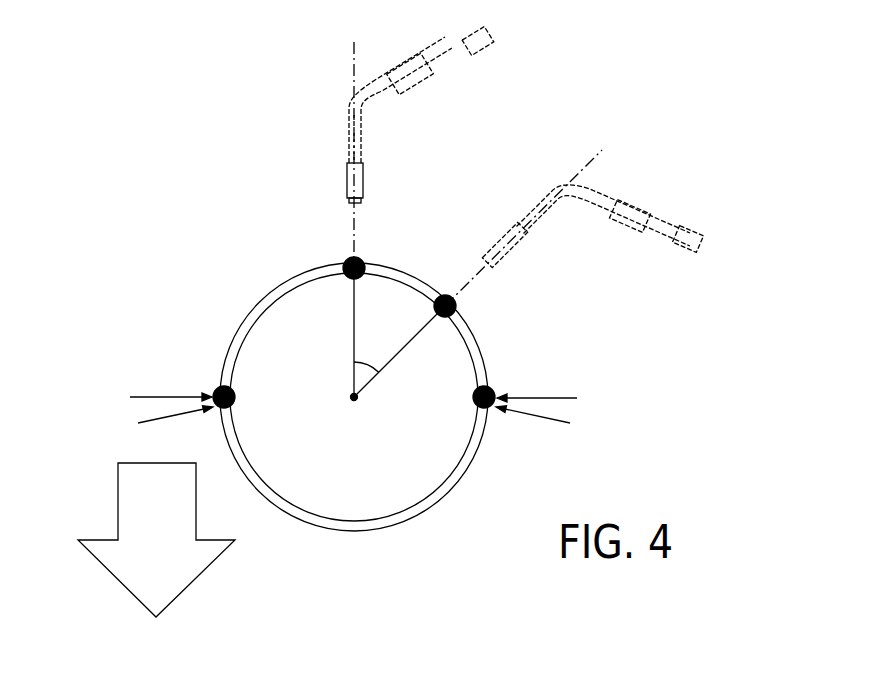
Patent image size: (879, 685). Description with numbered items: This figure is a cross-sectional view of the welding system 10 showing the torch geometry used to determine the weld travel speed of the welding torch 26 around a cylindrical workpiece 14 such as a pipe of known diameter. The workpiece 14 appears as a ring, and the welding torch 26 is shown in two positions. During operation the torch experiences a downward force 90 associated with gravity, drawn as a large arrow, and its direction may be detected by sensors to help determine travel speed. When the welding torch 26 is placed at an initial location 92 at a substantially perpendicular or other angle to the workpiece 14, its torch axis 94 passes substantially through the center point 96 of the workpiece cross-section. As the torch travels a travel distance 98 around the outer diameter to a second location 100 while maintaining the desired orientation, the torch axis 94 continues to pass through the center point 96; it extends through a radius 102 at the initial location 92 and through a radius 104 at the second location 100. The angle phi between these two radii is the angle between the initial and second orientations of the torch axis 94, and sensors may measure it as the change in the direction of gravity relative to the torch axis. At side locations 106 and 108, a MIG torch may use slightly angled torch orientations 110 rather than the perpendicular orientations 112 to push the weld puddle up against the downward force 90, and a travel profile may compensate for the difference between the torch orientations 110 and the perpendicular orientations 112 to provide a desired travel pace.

The welding system 10 is at (178, 211).
The workpiece 14 is at (405, 522).
The welding torch 26 is at (453, 53).
The downward force 90 is at (118, 582).
The initial location 92 is at (350, 260).
The torch axis 94 is at (357, 220).
The center point 96 is at (352, 403).
The travel distance 98 is at (362, 239).
The second location 100 is at (456, 301).
The radius 102 is at (353, 328).
The radius 104 is at (405, 347).
The location 106 is at (222, 390).
The location 108 is at (487, 407).
The torch orientations 110 is at (153, 422).
The perpendicular orientations 112 is at (168, 397).